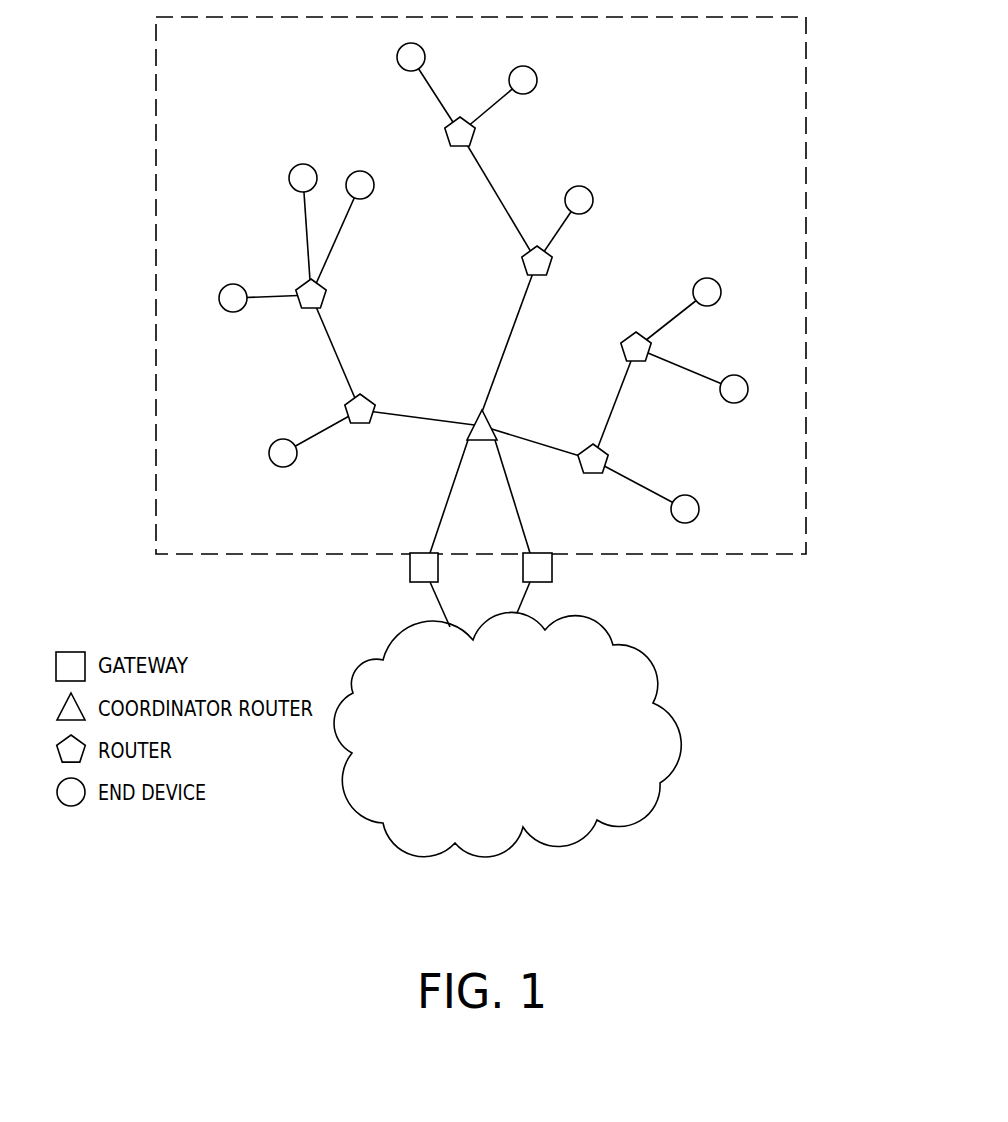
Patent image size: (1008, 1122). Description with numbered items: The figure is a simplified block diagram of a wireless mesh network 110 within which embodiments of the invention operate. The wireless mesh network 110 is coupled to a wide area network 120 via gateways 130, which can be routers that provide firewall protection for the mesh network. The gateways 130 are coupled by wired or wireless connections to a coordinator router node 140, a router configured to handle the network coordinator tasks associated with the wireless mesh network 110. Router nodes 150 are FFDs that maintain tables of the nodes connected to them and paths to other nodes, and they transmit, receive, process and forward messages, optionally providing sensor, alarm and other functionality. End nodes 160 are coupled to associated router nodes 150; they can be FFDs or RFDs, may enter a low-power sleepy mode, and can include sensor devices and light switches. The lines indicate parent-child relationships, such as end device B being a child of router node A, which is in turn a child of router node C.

The wireless mesh network 110 is at (806, 120).
The wide area network 120 is at (527, 777).
The gateways 130 is at (410, 567).
The coordinator router node 140 is at (474, 410).
The router nodes 150 is at (446, 135).
The end nodes 160 is at (397, 58).